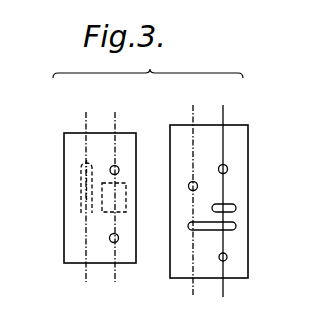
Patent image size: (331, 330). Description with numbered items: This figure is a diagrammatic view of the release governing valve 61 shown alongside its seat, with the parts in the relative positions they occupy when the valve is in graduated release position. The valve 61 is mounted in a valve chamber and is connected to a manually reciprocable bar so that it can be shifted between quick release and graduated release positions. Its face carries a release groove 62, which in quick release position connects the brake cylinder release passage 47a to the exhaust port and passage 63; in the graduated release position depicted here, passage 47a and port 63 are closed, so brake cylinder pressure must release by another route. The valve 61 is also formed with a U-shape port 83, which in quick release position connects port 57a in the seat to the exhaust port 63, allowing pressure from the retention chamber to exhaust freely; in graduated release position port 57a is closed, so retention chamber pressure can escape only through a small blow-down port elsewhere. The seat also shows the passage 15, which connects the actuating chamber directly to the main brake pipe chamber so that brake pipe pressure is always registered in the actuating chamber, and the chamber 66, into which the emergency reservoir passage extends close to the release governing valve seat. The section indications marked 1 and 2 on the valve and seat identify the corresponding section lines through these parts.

The release governing valve 61 is at (66, 216).
The release groove 62 is at (121, 190).
The U-shape port 83 is at (80, 190).
The passage 15 is at (228, 169).
The port 57a is at (197, 182).
The brake cylinder release passage 47a is at (228, 207).
The exhaust port 63 is at (232, 230).
The chamber 66 is at (226, 258).
The section line 1 is at (168, 205).
The section line 2 is at (136, 205).